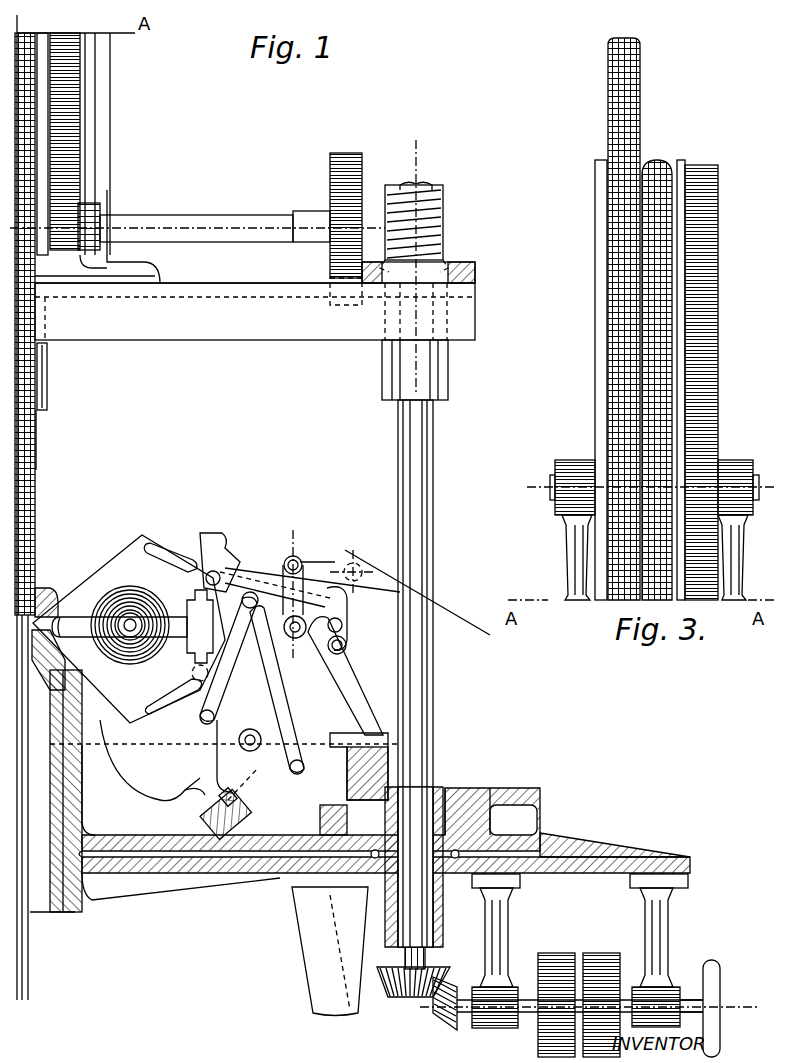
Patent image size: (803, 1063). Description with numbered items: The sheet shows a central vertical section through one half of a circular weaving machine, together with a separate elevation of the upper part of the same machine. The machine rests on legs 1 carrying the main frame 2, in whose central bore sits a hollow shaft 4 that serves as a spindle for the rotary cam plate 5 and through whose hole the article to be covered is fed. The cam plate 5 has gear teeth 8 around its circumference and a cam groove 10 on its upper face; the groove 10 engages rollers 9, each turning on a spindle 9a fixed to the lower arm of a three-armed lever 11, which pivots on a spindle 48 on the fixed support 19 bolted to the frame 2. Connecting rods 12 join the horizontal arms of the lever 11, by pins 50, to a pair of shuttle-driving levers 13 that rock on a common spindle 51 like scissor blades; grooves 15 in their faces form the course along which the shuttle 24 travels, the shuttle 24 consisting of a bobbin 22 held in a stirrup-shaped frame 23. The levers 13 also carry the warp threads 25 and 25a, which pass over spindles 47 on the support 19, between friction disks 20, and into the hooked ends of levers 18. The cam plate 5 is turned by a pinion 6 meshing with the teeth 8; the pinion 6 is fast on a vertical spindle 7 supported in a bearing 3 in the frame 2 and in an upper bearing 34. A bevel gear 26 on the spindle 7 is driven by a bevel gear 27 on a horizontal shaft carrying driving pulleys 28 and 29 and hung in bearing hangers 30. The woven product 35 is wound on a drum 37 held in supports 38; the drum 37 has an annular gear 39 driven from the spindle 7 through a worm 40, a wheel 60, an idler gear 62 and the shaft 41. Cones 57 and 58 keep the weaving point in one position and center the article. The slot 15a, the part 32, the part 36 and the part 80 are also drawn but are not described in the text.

In FIG. 1, the legs 1 is at (330, 951).
In FIG. 1, the main frame 2 is at (378, 716).
In FIG. 1, the bearing 3 is at (450, 890).
In FIG. 1, the hollow shaft 4 is at (55, 912).
In FIG. 1, the cam plate 5 is at (125, 765).
In FIG. 1, the pinion 6 is at (470, 800).
In FIG. 1, the vertical spindle 7 is at (428, 667).
In FIG. 1, the gear teeth 8 is at (335, 830).
In FIG. 1, the rollers 9 is at (232, 812).
In FIG. 1, the spindle 9a is at (185, 785).
In FIG. 1, the cam groove 10 is at (210, 845).
In FIG. 1, the three-armed lever 11 is at (212, 770).
In FIG. 1, the connecting rods 12 is at (300, 705).
In FIG. 1, the shuttle driving lever 13 is at (268, 589).
In FIG. 1, the grooves 15 is at (228, 556).
In FIG. 1, the slot 15a is at (173, 708).
In FIG. 1, the hook levers 18 is at (349, 620).
In FIG. 1, the fixed support 19 is at (340, 695).
In FIG. 1, the friction disks 20 is at (300, 556).
In FIG. 1, the bobbin 22 is at (130, 586).
In FIG. 1, the stirrup-shaped frame 23 is at (62, 614).
In FIG. 1, the shuttle 24 is at (140, 626).
In FIG. 1, the warp threads 25 is at (120, 678).
In FIG. 1, the warp threads 25a is at (103, 556).
In FIG. 1, the bevel gear 26 is at (386, 998).
In FIG. 1, the bevel gear 27 is at (445, 1022).
In FIG. 1, the driving pulley 28 is at (556, 980).
In FIG. 1, the driving pulley 29 is at (596, 985).
In FIG. 1, the bearing hangers 30 is at (515, 908).
In FIG. 1, the guide block 32 is at (47, 384).
In FIG. 1, the bearing 34 is at (449, 375).
In FIG. 1, the product 35 is at (30, 962).
In FIG. 1, the rack 36 is at (35, 36).
In FIG. 3, the rack 36 is at (641, 105).
In FIG. 3, the drum 37 is at (595, 325).
In FIG. 1, the supports 38 is at (101, 147).
In FIG. 3, the supports 38 is at (562, 555).
In FIG. 1, the annular gear 39 is at (70, 78).
In FIG. 3, the annular gear 39 is at (716, 330).
In FIG. 1, the worm 40 is at (446, 240).
In FIG. 1, the shaft 41 is at (228, 214).
In FIG. 1, the spindles 47 is at (358, 565).
In FIG. 1, the spindle 48 is at (250, 752).
In FIG. 1, the pins 50 is at (660, 925).
In FIG. 1, the common spindle 51 is at (255, 311).
In FIG. 1, the cone 57 is at (42, 585).
In FIG. 1, the cone 58 is at (82, 760).
In FIG. 1, the wheel 60 is at (432, 185).
In FIG. 1, the idler gear 62 is at (330, 280).
In FIG. 1, the guide 80 is at (40, 452).